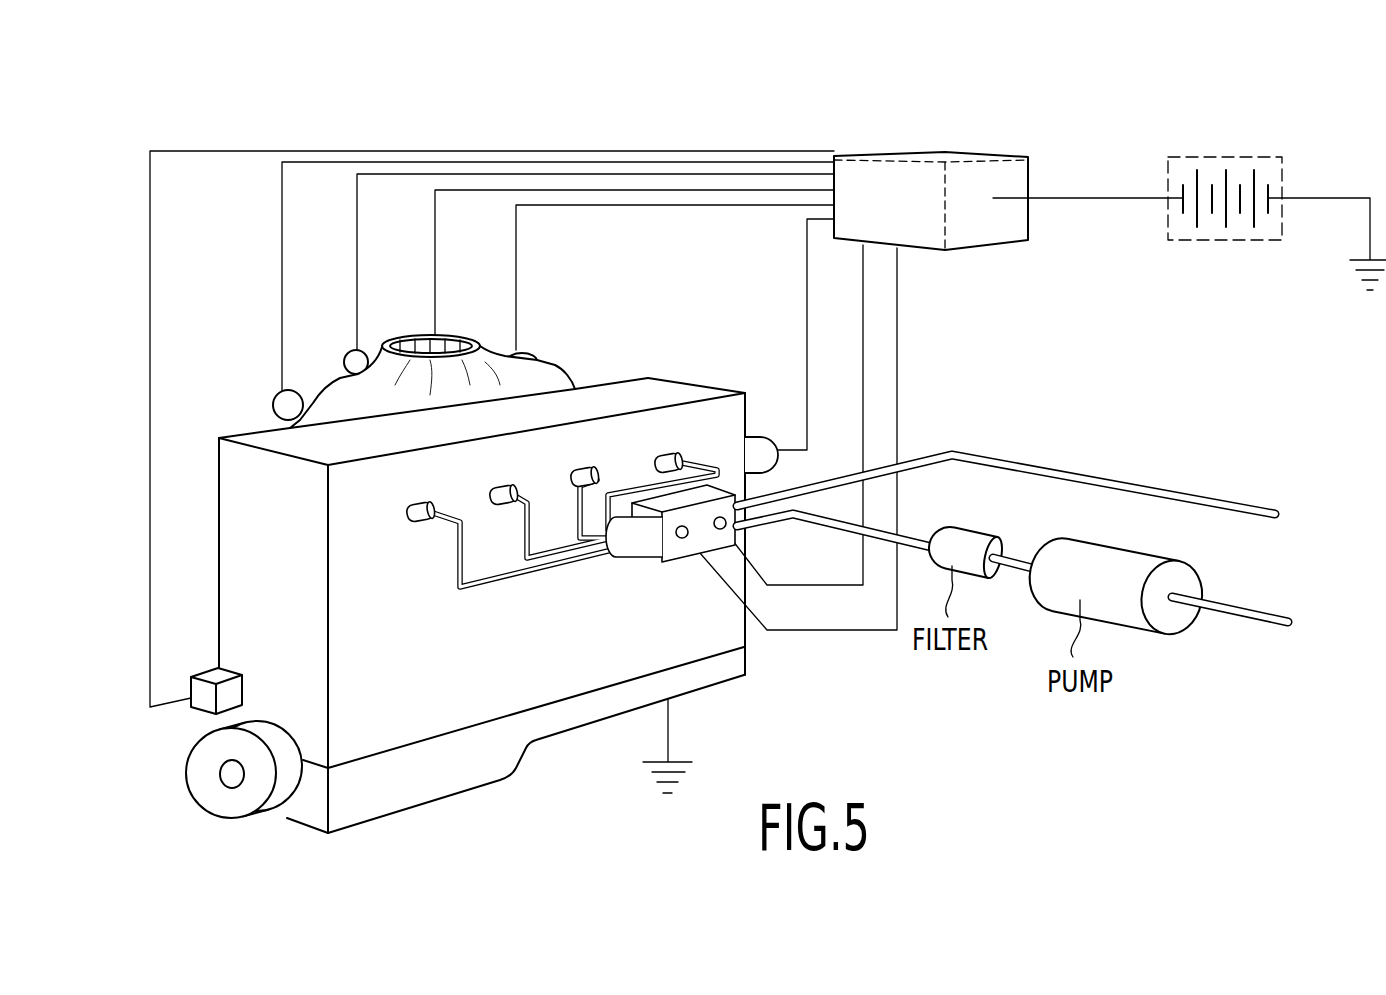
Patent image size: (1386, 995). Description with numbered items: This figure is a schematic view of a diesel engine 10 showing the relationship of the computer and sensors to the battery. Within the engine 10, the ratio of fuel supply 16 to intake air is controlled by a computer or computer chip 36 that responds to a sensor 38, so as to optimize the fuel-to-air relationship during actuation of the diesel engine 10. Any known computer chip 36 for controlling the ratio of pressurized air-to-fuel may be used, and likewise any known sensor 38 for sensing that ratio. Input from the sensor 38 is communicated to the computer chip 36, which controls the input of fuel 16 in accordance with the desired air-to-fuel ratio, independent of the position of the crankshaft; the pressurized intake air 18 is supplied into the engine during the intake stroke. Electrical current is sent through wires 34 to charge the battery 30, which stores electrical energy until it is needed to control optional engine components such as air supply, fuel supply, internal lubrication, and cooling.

The diesel engine 10 is at (408, 719).
The fuel supply 16 is at (417, 505).
The pressurized intake air 18 is at (460, 316).
The battery 30 is at (1283, 160).
The wires 34 is at (628, 205).
The computer chip 36 is at (941, 157).
The sensor 38 is at (507, 353).